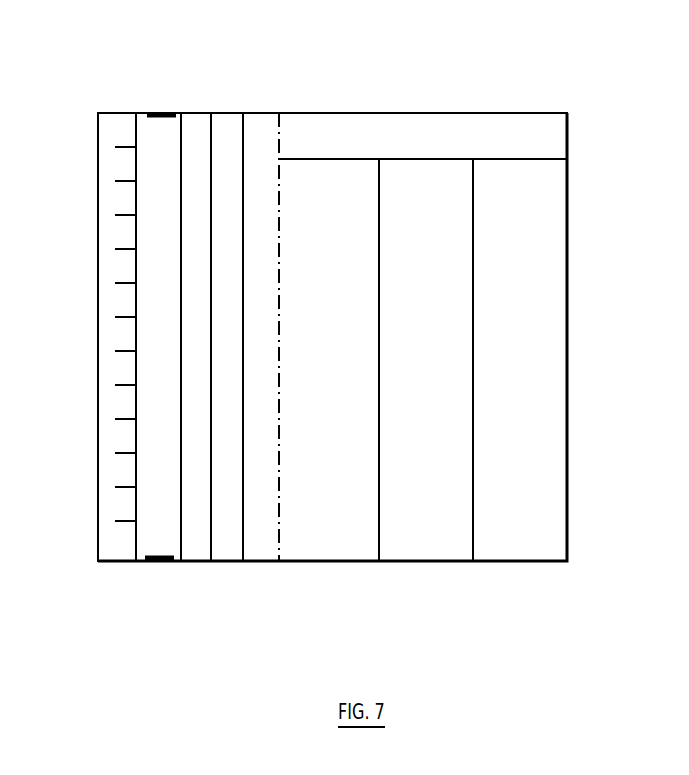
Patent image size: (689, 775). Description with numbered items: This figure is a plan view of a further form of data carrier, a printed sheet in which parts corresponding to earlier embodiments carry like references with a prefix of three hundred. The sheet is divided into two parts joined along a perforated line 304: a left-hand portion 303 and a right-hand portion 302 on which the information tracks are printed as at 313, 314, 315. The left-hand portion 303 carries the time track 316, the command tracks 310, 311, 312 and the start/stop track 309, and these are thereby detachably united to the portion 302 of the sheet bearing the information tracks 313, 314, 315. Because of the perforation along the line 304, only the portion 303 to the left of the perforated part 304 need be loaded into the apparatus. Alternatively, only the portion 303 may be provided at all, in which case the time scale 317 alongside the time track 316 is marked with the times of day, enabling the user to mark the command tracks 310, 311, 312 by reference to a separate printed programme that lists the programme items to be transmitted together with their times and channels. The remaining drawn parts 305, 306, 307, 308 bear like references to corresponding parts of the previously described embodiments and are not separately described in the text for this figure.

The portion of the sheet 302 is at (447, 109).
The portion 303 is at (125, 110).
The perforated line 304 is at (280, 112).
The column 305 is at (167, 562).
The column line 306 is at (184, 112).
The lower marker bar 307 is at (159, 562).
The upper marker bar 308 is at (150, 112).
The start/stop track 309 is at (150, 498).
The command track 310 is at (198, 562).
The command track 311 is at (236, 562).
The command track 312 is at (270, 562).
The information track 313 is at (337, 559).
The information track 314 is at (425, 559).
The information track 315 is at (512, 559).
The time track 316 is at (116, 560).
The time scale 317 is at (116, 527).